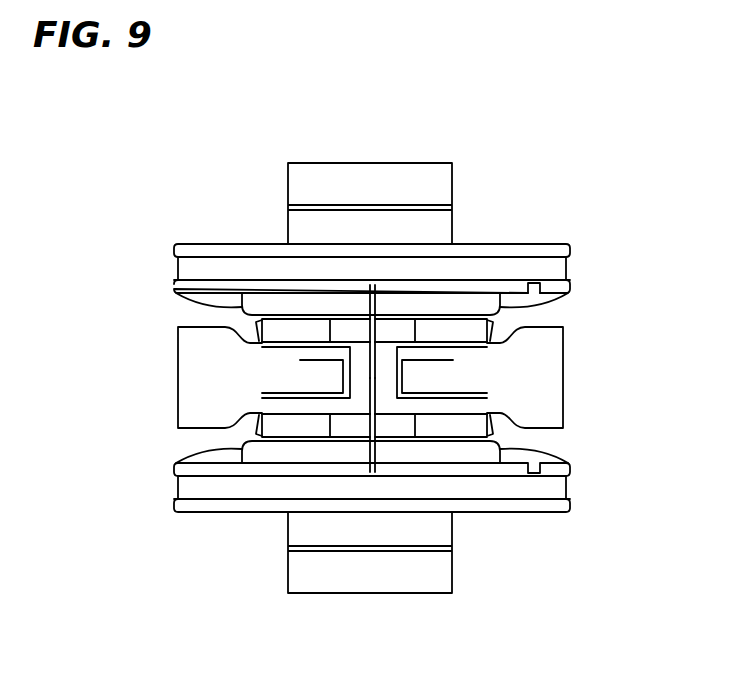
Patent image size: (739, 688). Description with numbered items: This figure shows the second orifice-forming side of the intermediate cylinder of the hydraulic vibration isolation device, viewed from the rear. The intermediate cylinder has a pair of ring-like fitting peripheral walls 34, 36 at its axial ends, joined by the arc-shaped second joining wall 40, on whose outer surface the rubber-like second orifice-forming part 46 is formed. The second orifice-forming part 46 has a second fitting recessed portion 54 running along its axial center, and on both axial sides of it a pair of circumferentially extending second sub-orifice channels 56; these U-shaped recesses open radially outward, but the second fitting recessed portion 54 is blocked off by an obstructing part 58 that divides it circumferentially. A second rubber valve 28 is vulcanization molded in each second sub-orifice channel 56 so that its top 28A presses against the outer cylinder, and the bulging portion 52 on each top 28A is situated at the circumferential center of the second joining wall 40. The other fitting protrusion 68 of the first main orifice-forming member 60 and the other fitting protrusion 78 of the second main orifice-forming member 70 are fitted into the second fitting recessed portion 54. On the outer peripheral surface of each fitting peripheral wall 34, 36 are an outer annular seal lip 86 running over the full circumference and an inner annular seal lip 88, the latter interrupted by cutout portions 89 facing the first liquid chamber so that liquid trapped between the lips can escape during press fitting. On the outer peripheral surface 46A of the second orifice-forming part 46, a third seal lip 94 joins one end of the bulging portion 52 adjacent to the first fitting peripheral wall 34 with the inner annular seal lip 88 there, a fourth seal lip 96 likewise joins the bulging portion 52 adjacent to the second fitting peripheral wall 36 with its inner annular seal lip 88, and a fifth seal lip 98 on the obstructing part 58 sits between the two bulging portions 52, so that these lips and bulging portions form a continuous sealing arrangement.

The second rubber valve 28 is at (342, 327).
The top of second rubber valve 28A is at (383, 360).
The first fitting peripheral wall 34 is at (198, 268).
The second fitting peripheral wall 36 is at (192, 485).
The second joining wall 40 is at (467, 330).
The second orifice-forming part 46 is at (467, 302).
The outer peripheral surface of second orifice-forming part 46A is at (343, 302).
The bulging portion 52 is at (358, 332).
The second fitting recessed portion 54 is at (392, 376).
The second sub-orifice channel 56 is at (285, 327).
The obstructing part 58 is at (403, 378).
The first main orifice-forming member 60 is at (553, 405).
The fitting protrusion 68 is at (450, 385).
The second main orifice-forming member 70 is at (192, 388).
The fitting protrusion 78 is at (320, 382).
The outer annular seal lip 86 is at (175, 248).
The inner annular seal lip 88 is at (175, 285).
The cutout portion 89 is at (533, 283).
The third seal lip 94 is at (378, 335).
The fourth seal lip 96 is at (375, 440).
The fifth seal lip 98 is at (443, 300).